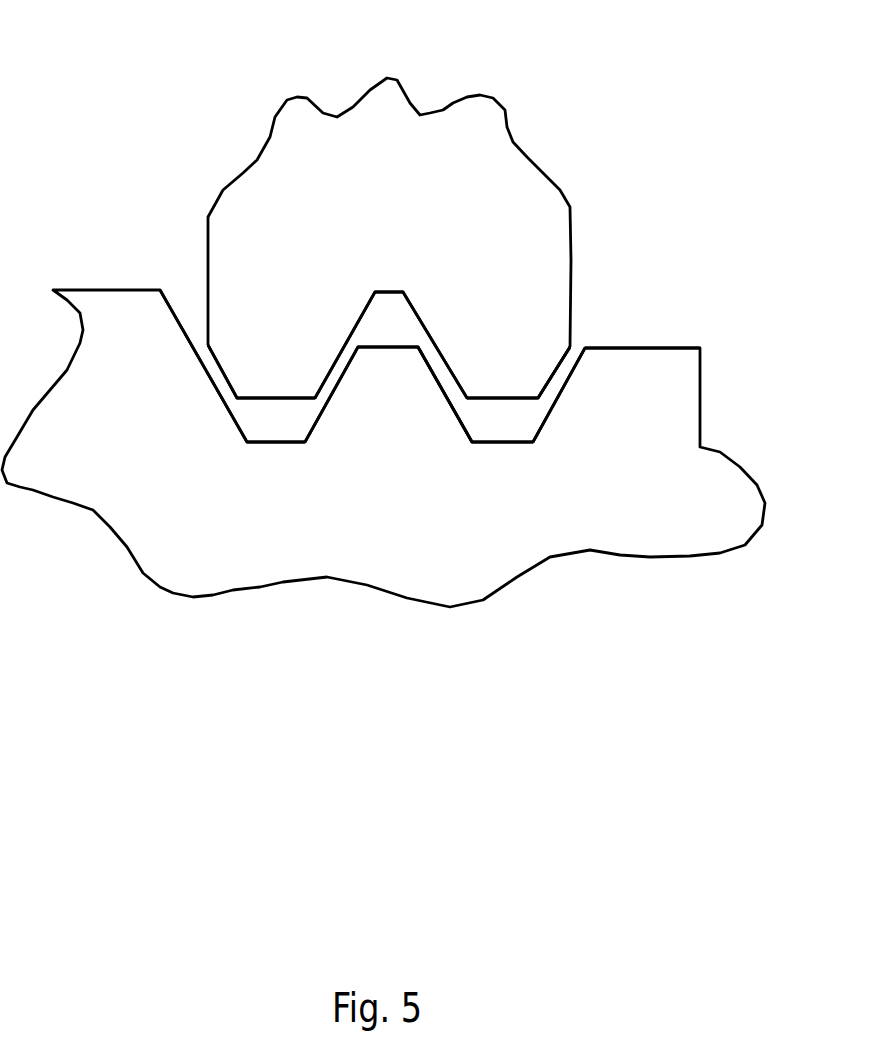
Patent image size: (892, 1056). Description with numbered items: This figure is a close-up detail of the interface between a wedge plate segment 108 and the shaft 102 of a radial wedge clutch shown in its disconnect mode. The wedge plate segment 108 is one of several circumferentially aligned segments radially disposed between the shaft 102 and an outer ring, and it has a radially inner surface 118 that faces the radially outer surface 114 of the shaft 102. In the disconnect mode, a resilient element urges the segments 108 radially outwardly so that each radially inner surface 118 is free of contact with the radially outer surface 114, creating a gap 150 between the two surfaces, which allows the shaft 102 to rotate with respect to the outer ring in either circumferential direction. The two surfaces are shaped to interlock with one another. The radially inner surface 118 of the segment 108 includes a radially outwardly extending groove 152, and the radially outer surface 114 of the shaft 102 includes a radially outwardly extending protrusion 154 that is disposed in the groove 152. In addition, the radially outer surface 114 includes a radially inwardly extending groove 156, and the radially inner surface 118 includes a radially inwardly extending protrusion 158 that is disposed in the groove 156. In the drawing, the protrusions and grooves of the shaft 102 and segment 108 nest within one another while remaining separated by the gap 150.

The shaft 102 is at (377, 554).
The wedge plate segment 108 is at (443, 140).
The radially outer surface 114 is at (651, 332).
The radially inner surface 118 is at (356, 321).
The gap 150 is at (570, 362).
The radially outwardly extending groove 152 is at (392, 290).
The radially outwardly extending protrusion 154 is at (405, 390).
The radially inwardly extending groove 156 is at (272, 445).
The radially inwardly extending protrusion 158 is at (265, 388).